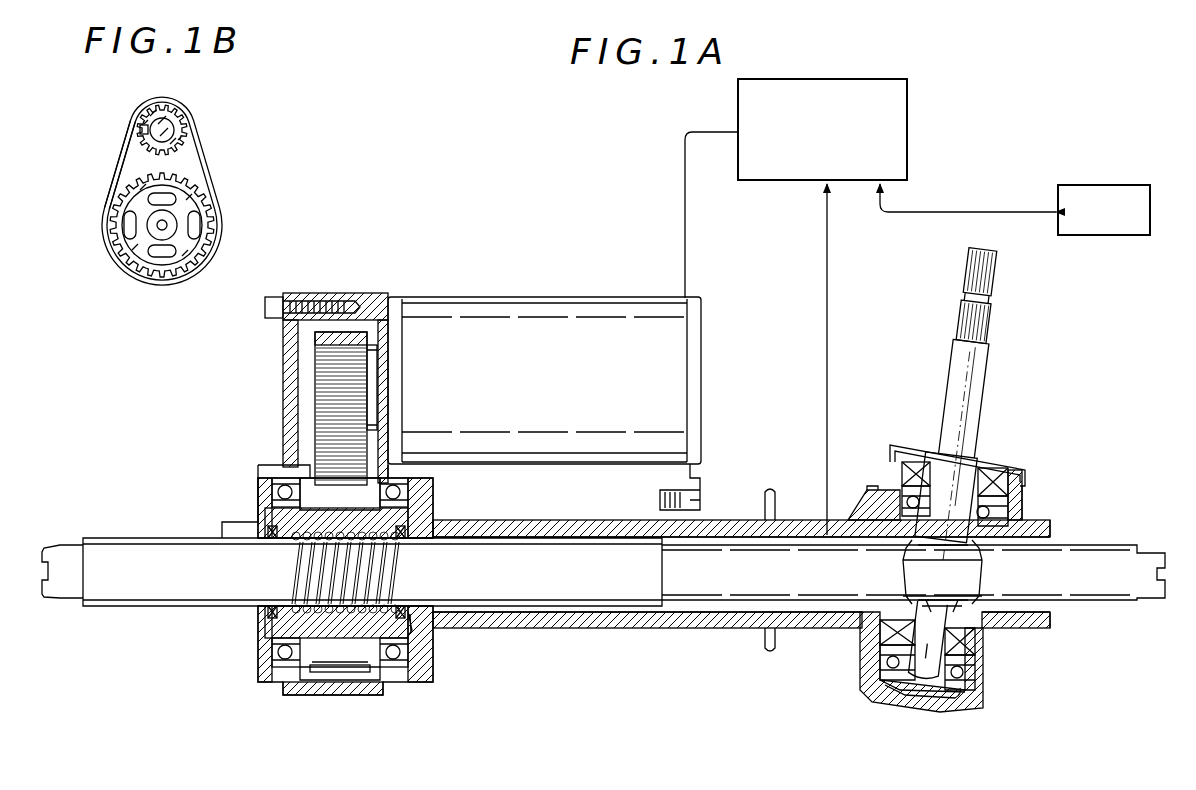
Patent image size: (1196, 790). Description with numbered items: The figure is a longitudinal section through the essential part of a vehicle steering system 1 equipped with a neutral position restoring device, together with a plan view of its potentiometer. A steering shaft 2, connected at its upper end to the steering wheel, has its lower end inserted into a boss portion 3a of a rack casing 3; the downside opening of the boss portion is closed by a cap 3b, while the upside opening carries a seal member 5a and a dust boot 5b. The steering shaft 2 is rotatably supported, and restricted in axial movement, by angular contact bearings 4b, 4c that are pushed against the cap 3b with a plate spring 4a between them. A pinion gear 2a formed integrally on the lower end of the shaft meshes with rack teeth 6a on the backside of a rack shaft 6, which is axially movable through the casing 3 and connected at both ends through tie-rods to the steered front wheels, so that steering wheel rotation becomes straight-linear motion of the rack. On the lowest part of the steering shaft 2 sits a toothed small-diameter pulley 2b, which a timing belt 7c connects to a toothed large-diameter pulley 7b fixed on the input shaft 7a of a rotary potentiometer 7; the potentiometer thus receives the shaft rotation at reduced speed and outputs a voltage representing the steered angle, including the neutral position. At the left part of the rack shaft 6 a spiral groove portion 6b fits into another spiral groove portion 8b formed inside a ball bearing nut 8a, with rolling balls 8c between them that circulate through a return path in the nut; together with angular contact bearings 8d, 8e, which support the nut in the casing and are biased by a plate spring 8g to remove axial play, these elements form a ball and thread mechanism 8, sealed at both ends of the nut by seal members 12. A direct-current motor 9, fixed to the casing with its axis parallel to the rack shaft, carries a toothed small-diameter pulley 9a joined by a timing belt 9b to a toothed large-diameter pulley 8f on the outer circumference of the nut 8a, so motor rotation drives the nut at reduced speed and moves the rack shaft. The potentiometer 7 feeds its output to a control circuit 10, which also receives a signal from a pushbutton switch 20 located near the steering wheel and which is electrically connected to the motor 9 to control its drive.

In FIG. 1A, the steering system 1 is at (1000, 153).
In FIG. 1A, the steering shaft 2 is at (982, 372).
In FIG. 1B, the pinion gear 2a is at (172, 121).
In FIG. 1A, the pinion gear 2a is at (914, 540).
In FIG. 1B, the toothed small-diameter pulley 2b is at (186, 128).
In FIG. 1A, the toothed small-diameter pulley 2b is at (960, 670).
In FIG. 1A, the rack casing 3 is at (740, 628).
In FIG. 1A, the boss portion 3a is at (862, 528).
In FIG. 1A, the cap 3b is at (905, 706).
In FIG. 1A, the plate spring 4a is at (890, 690).
In FIG. 1A, the angular contact bearing 4b is at (885, 666).
In FIG. 1A, the angular contact bearing 4c is at (905, 498).
In FIG. 1A, the seal member 5a is at (1009, 484).
In FIG. 1A, the dust boot 5b is at (1000, 452).
In FIG. 1A, the rack shaft 6 is at (680, 598).
In FIG. 1A, the rack teeth 6a is at (966, 540).
In FIG. 1A, the spiral groove portion 6b is at (412, 594).
In FIG. 1B, the rotary potentiometer 7 is at (182, 175).
In FIG. 1B, the input shaft 7a is at (166, 228).
In FIG. 1B, the toothed large-diameter pulley 7b is at (204, 215).
In FIG. 1B, the timing belt 7c is at (118, 173).
In FIG. 1A, the timing belt 7c is at (975, 640).
In FIG. 1A, the ball and thread mechanism 8 is at (412, 618).
In FIG. 1A, the ball bearing nut 8a is at (410, 650).
In FIG. 1A, the spiral groove portion 8b is at (296, 598).
In FIG. 1A, the rolling balls 8c is at (300, 550).
In FIG. 1A, the angular contact bearing 8d is at (262, 492).
In FIG. 1A, the angular contact bearing 8e is at (420, 496).
In FIG. 1A, the toothed large-diameter pulley 8f is at (350, 672).
In FIG. 1A, the plate spring 8g is at (412, 636).
In FIG. 1A, the direct-current motor 9 is at (600, 318).
In FIG. 1A, the toothed small-diameter pulley 9a is at (314, 376).
In FIG. 1A, the timing belt 9b is at (350, 452).
In FIG. 1A, the control circuit 10 is at (908, 97).
In FIG. 1A, the seal member 12 is at (272, 618).
In FIG. 1A, the pushbutton switch 20 is at (1076, 185).